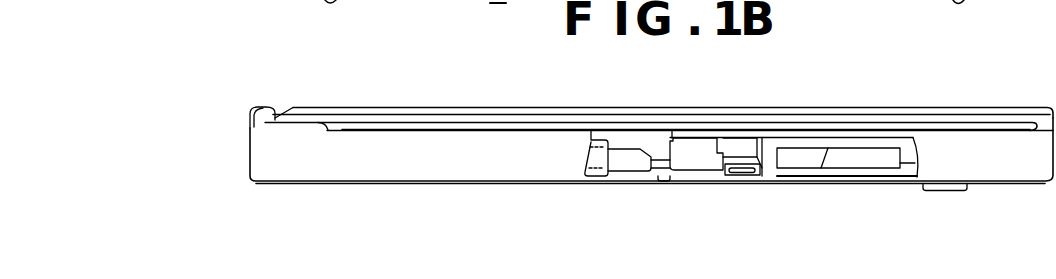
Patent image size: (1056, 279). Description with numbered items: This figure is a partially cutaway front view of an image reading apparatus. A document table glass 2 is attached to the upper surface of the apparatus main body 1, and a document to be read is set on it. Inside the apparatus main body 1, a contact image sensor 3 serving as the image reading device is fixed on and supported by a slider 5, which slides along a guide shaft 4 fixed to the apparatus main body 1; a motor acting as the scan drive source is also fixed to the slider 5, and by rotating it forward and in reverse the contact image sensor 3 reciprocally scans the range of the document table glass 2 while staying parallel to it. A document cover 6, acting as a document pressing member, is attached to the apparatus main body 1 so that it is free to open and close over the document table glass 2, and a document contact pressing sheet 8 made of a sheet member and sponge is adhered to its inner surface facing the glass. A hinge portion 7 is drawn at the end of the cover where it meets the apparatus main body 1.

The apparatus main body 1 is at (455, 152).
The document table glass 2 is at (603, 139).
The contact image sensor 3 is at (758, 151).
The guide shaft 4 is at (664, 160).
The slider 5 is at (694, 149).
The document cover 6 is at (396, 107).
The hinge 7 is at (292, 109).
The document contact pressing sheet 8 is at (890, 122).